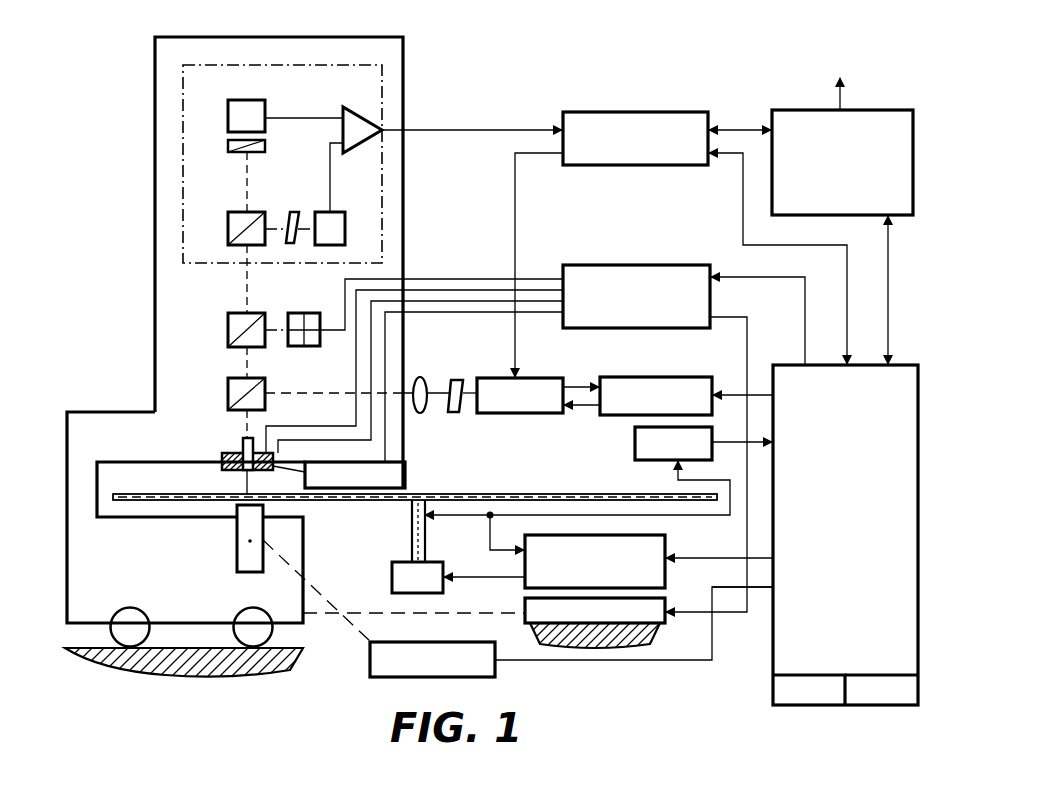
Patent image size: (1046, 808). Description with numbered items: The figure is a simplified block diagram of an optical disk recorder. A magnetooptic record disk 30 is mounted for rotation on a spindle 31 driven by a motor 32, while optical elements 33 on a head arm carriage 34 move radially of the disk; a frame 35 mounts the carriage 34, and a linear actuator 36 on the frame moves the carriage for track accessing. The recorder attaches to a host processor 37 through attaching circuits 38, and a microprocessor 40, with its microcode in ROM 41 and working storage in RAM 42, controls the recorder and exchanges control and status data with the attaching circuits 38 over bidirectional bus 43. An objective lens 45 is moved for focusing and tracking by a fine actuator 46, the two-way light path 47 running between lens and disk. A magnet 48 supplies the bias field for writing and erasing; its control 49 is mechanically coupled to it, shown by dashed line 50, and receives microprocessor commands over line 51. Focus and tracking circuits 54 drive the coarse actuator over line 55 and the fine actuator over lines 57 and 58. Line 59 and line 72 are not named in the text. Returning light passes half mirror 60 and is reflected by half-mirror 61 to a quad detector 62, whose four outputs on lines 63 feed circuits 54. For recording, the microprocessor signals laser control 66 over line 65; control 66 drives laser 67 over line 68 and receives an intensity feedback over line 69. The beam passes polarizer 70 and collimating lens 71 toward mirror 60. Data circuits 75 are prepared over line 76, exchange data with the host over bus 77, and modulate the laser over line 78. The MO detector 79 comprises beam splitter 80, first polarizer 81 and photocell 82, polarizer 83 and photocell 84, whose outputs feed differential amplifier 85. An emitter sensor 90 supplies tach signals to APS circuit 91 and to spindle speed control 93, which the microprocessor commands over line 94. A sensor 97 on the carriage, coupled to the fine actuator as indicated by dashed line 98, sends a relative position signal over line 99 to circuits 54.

The magnetooptic record disk 30 is at (140, 494).
The spindle 31 is at (412, 518).
The motor 32 is at (392, 572).
The optical elements / head arm 33 is at (155, 162).
The head arm carriage 34 is at (303, 634).
The frame 35 is at (208, 648).
The linear actuator 36 is at (525, 606).
The host processor 37 is at (774, 62).
The attaching circuits 38 is at (860, 110).
The microprocessor 40 is at (800, 365).
The read only memory (ROM) 41 is at (872, 706).
The random access memory (RAM) 42 is at (800, 706).
The bidirectional bus 43 is at (885, 252).
The objective lens 45 is at (243, 446).
The fine actuator 46 is at (222, 456).
The two-way light path 47 is at (247, 480).
The magnet 48 is at (237, 541).
The control 49 is at (495, 672).
The dashed line (mechanical coupling) 50 is at (303, 577).
The line 51 is at (712, 662).
The focus and tracking circuits 54 is at (675, 265).
The line 55 is at (747, 326).
The line 57 is at (462, 290).
The line 58 is at (520, 313).
The microprocessor to focus and tracking line 59 is at (785, 277).
The half mirror 60 is at (228, 390).
The half-mirror 61 is at (228, 322).
The quad detector 62 is at (300, 346).
The lines 63 is at (420, 279).
The line 65 is at (740, 393).
The laser control 66 is at (640, 377).
The laser 67 is at (498, 378).
The line 68 is at (582, 407).
The line 69 is at (580, 385).
The polarizer 70 is at (458, 412).
The collimating lens 71 is at (427, 399).
The light beam path 72 is at (290, 393).
The data circuits 75 is at (652, 112).
The line 76 is at (743, 176).
The bus 77 is at (755, 96).
The line 78 is at (515, 183).
The MO detector (data detection portion) 79 is at (308, 92).
The half-mirror or beam splitter 80 is at (228, 228).
The first polarizer 81 is at (295, 212).
The photocell 82 is at (345, 224).
The polarizer 83 is at (228, 146).
The photocell 84 is at (228, 110).
The differential amplifier 85 is at (352, 105).
The emitter sensor 90 is at (447, 518).
The APS circuit 91 is at (635, 445).
The spindle speed control circuits 93 is at (668, 537).
The line 94 is at (712, 598).
The sensor 97 is at (405, 478).
The dashed line (operative coupling) 98 is at (290, 476).
The electrical line 99 is at (424, 313).